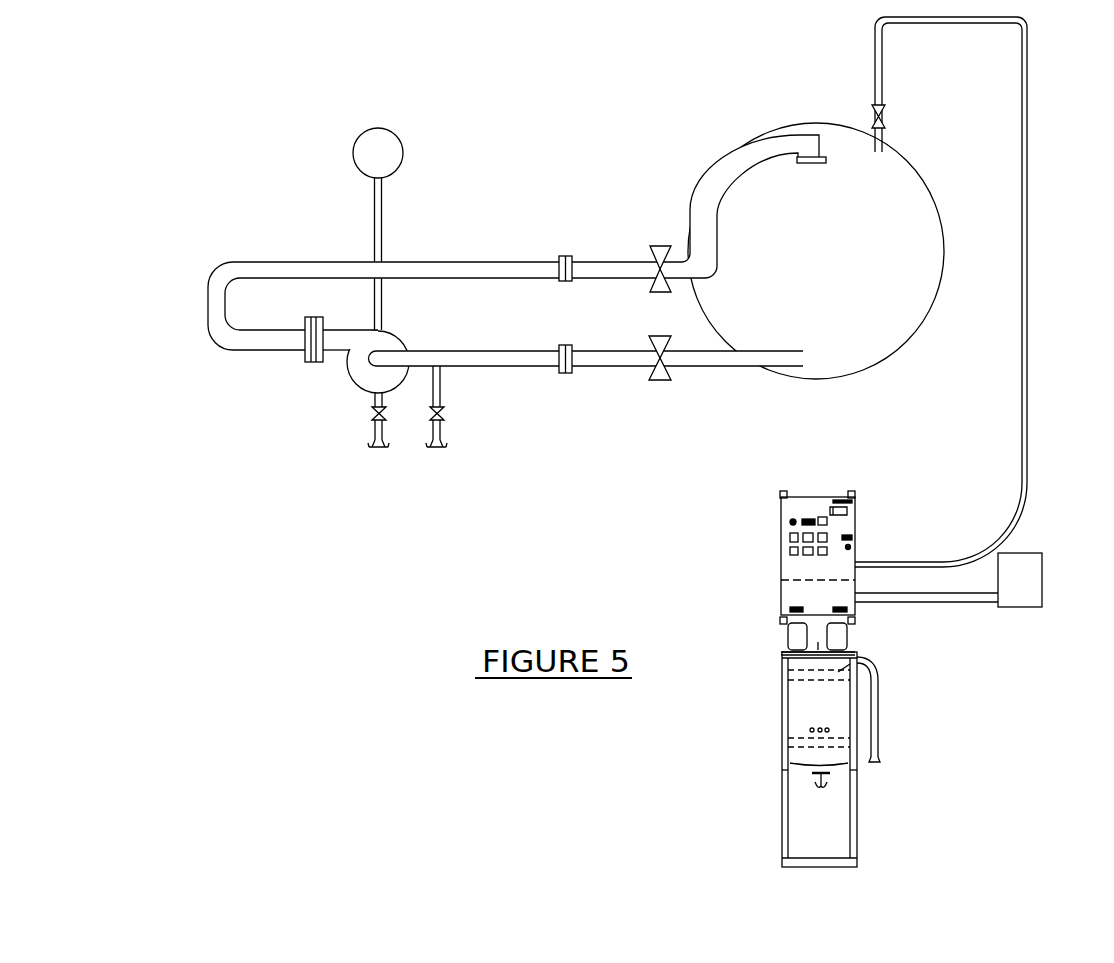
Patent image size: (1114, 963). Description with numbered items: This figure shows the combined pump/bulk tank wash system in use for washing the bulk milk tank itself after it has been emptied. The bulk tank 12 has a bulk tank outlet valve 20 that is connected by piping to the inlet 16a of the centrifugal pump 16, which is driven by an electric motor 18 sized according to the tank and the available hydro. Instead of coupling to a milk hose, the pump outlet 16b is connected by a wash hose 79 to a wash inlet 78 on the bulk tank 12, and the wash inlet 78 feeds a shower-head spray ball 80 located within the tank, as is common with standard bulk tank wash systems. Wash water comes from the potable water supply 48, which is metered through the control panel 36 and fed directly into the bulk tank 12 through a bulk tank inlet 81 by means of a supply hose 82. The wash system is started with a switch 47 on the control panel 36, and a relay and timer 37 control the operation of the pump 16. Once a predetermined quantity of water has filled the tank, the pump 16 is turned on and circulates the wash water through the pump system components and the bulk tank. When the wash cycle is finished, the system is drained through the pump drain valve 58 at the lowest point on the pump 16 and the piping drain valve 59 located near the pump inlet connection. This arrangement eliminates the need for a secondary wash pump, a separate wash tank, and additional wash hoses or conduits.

The bulk tank 12 is at (860, 178).
The centrifugal pump 16 is at (370, 380).
The pump inlet 16a is at (380, 363).
The pump outlet 16b is at (330, 333).
The electric motor 18 is at (387, 147).
The bulk tank outlet valve 20 is at (660, 383).
The control panel 36 is at (785, 507).
The relay and timer 37 is at (787, 528).
The switch 47 is at (823, 537).
The potable water supply 48 is at (1030, 575).
The pump drain valve 58 is at (380, 450).
The piping drain valve 59 is at (446, 447).
The wash inlet 78 is at (652, 248).
The wash hose 79 is at (505, 255).
The shower-head spray ball 80 is at (827, 152).
The bulk tank inlet 81 is at (888, 103).
The supply hose 82 is at (1022, 455).